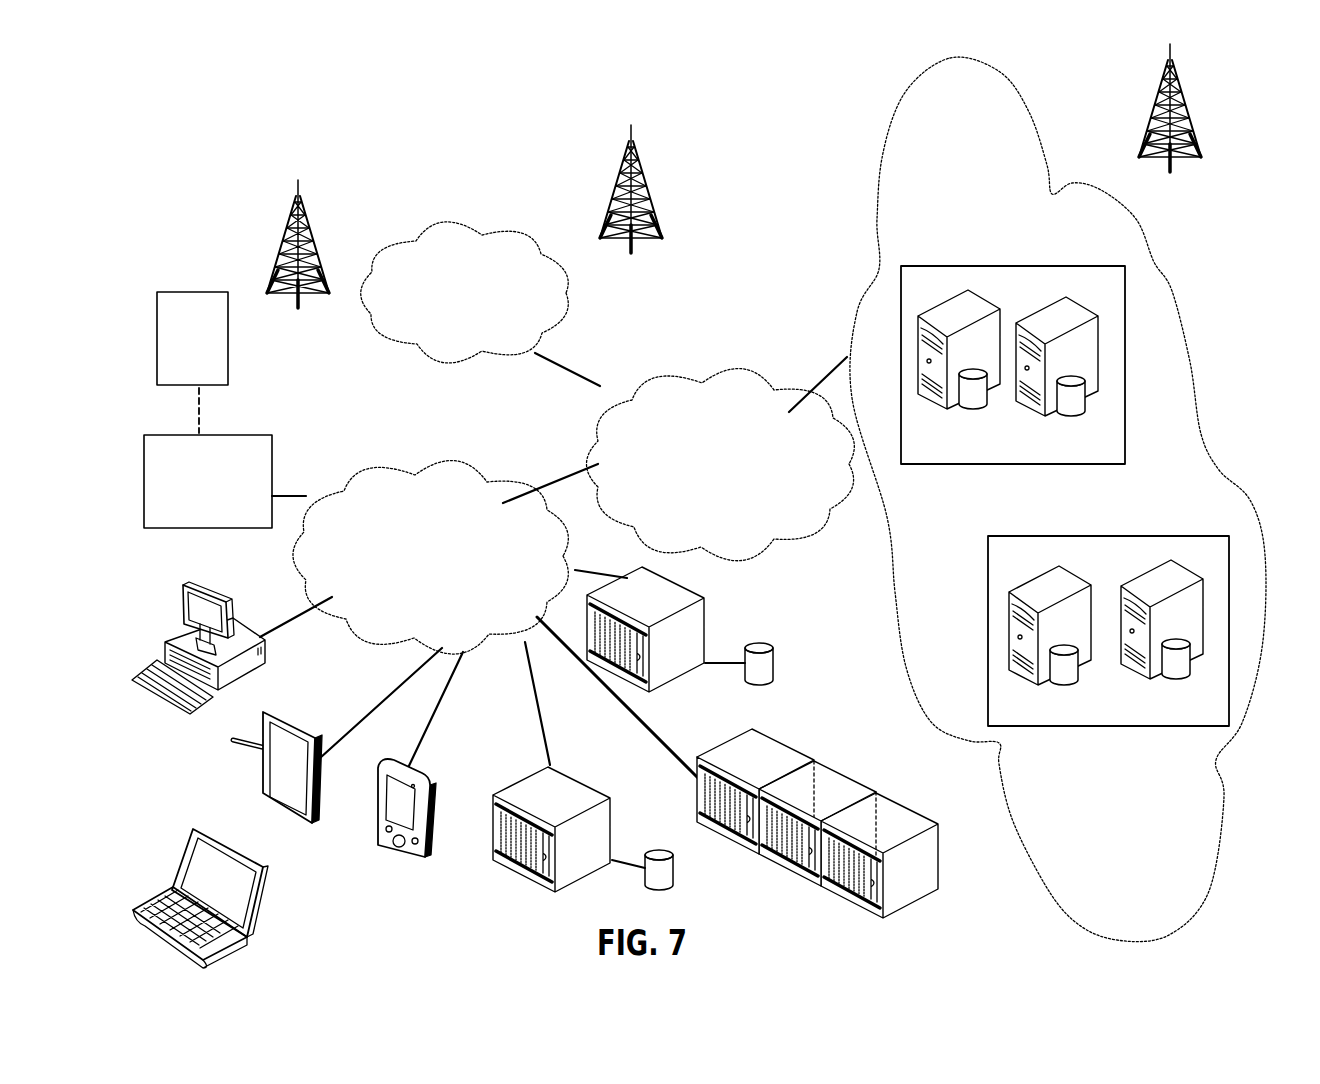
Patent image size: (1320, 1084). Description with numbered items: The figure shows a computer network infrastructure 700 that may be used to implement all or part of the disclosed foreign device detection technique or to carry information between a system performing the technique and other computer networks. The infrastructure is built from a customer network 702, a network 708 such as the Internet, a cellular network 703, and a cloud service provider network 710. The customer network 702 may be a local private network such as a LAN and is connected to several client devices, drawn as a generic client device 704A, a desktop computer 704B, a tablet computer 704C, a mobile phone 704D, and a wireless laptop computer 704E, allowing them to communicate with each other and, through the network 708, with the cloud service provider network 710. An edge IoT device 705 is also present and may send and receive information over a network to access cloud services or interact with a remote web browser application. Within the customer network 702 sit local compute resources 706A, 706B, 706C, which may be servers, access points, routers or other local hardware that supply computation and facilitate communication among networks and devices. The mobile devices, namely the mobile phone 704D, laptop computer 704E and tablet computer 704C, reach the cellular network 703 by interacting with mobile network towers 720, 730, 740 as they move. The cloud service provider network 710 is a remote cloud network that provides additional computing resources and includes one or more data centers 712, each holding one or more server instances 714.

The computer network infrastructure 700 is at (383, 155).
The customer network 702 is at (402, 465).
The cellular network 703 is at (488, 243).
The client device 704A is at (237, 433).
The desktop computer 704B is at (208, 592).
The tablet computer 704C is at (288, 718).
The mobile phone 704D is at (430, 775).
The laptop computer 704E is at (262, 873).
The edge IoT device 705 is at (173, 290).
The local compute resource 706A is at (555, 792).
The local compute resource 706B is at (705, 620).
The local compute resource 706C is at (772, 735).
The network 708 is at (656, 368).
The cloud service provider network 710 is at (1170, 266).
The data center 712 is at (1128, 499).
The server instance 714 is at (1182, 704).
The mobile network tower 720 is at (631, 205).
The mobile network tower 730 is at (298, 261).
The mobile network tower 740 is at (1170, 124).